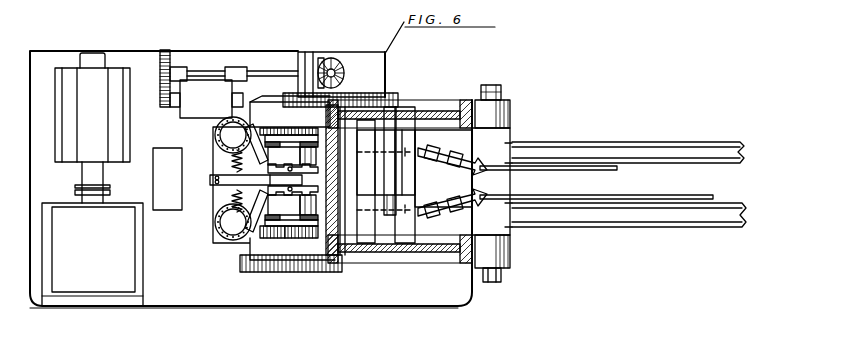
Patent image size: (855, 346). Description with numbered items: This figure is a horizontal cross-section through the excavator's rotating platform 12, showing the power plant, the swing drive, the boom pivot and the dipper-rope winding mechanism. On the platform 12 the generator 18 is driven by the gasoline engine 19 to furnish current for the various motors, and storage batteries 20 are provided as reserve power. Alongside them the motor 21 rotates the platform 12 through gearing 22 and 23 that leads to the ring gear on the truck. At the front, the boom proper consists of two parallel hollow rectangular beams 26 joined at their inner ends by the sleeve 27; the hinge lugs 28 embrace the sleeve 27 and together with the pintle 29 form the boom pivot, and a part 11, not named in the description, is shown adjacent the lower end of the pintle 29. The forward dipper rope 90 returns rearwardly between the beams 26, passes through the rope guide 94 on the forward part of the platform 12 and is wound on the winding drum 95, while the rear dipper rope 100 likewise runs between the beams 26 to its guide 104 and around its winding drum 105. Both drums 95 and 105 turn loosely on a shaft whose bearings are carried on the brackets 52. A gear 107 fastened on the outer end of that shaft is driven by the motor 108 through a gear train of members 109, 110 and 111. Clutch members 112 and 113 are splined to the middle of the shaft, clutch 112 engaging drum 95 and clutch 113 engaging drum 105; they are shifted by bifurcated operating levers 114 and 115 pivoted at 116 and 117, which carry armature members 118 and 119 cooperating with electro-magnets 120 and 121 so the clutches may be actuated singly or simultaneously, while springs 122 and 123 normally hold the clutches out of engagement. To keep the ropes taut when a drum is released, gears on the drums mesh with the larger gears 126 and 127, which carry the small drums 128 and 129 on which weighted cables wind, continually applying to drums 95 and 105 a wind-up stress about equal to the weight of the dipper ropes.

The nut 11 is at (495, 282).
The platform 12 is at (200, 298).
The generator 18 is at (63, 78).
The gasoline engine 19 is at (112, 288).
The storage batteries 20 is at (160, 172).
The motor 21 is at (190, 100).
The gearing 22 is at (168, 72).
The gearing 23 is at (322, 60).
The hollow beams 26 is at (710, 152).
The sleeve 27 is at (505, 180).
The hinge lugs 28 is at (510, 110).
The pintle 29 is at (496, 86).
The brackets 52 is at (430, 114).
The forward dipper rope 90 is at (590, 168).
The rope guide 94 is at (452, 160).
The winding drum 95 is at (271, 134).
The dipper rope 100 is at (665, 190).
The guide 104 is at (448, 210).
The winding drum 105 is at (277, 230).
The gear 107 is at (250, 272).
The motor 108 is at (415, 180).
The gear train member 109 is at (398, 100).
The gear train member 110 is at (356, 92).
The gear train member 111 is at (340, 272).
The clutch member 112 is at (300, 171).
The clutch member 113 is at (300, 189).
The bifurcated operating lever 114 is at (228, 168).
The bifurcated operating lever 115 is at (228, 192).
The pivot 116 is at (226, 176).
The pivot 117 is at (226, 183).
The armature member 118 is at (292, 150).
The armature member 119 is at (274, 214).
The electro-magnet 120 is at (236, 150).
The electro-magnet 121 is at (253, 205).
The spring 122 is at (252, 162).
The spring 123 is at (235, 195).
The gear 126 is at (312, 127).
The gear 127 is at (285, 266).
The small drum 128 is at (287, 134).
The small drum 129 is at (293, 232).